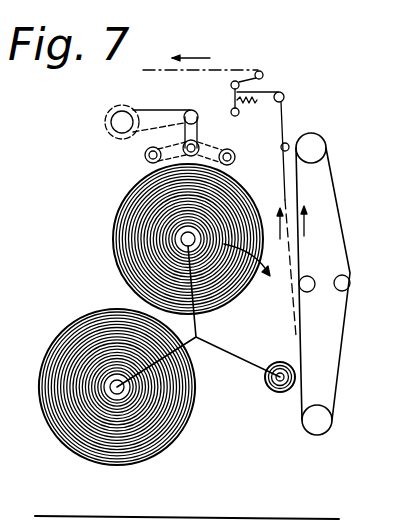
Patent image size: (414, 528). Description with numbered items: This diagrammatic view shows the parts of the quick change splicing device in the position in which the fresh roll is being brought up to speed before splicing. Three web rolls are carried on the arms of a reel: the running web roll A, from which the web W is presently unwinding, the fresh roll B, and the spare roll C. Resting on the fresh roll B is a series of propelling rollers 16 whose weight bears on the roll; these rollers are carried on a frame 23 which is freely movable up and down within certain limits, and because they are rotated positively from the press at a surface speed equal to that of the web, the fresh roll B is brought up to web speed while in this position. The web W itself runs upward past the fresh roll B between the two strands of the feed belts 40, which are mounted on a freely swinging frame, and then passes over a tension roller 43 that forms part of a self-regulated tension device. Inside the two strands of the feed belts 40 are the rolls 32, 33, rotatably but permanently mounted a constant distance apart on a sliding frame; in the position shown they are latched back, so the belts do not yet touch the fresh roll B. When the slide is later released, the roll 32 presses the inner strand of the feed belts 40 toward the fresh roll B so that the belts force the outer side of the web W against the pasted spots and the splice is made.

The propelling rollers 16 is at (103, 166).
The frame 23 is at (153, 117).
The roll 32 is at (308, 275).
The roll 33 is at (336, 293).
The feed belts 40 is at (336, 201).
The tension roller 43 is at (231, 84).
The running web roll A is at (270, 384).
The fresh roll B is at (116, 220).
The spare roll C is at (84, 318).
The web W is at (283, 180).